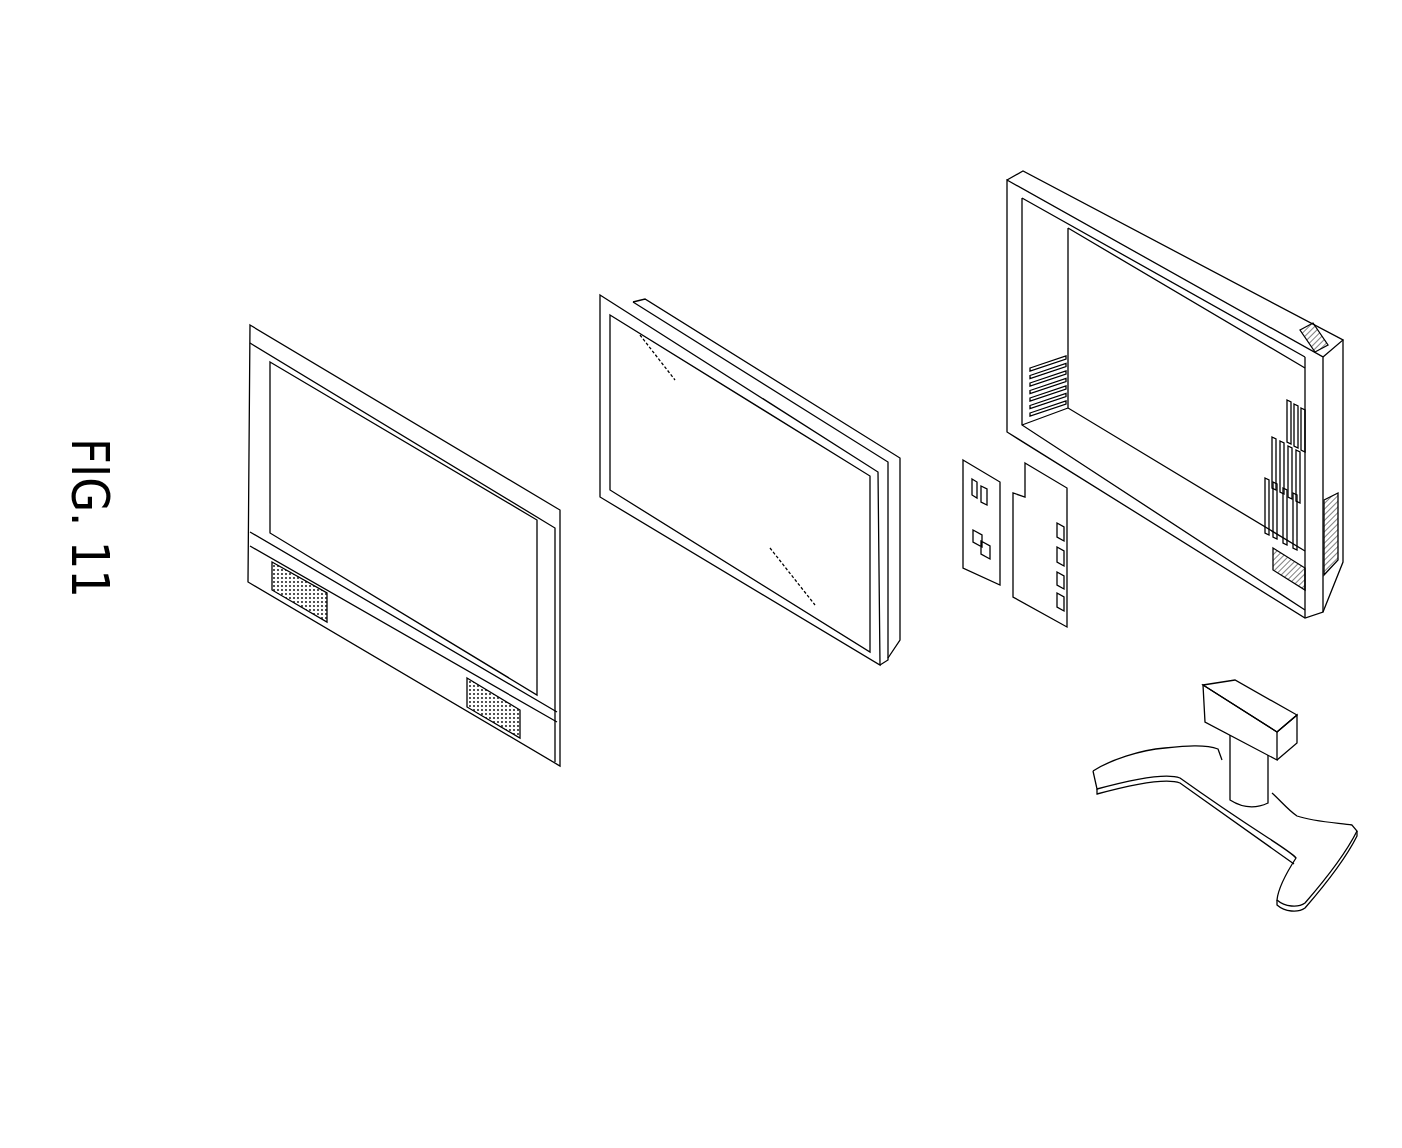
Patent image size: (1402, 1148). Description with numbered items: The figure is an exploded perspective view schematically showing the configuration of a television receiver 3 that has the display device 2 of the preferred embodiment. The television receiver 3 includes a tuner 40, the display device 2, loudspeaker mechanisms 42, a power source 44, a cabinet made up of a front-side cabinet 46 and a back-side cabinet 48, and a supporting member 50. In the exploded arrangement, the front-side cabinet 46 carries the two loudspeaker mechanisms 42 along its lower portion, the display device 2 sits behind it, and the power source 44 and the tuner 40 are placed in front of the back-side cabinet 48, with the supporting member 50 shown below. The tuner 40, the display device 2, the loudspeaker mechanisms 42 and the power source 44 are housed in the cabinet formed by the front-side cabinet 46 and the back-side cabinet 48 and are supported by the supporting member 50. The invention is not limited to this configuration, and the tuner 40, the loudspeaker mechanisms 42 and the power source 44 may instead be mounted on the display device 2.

The television receiver 3 is at (1371, 120).
The display device 2 is at (680, 325).
The front-side cabinet 46 is at (394, 547).
The loudspeaker mechanisms 42 is at (278, 602).
The power source 44 is at (980, 569).
The tuner 40 is at (1037, 607).
The back-side cabinet 48 is at (1117, 200).
The supporting member 50 is at (1298, 812).